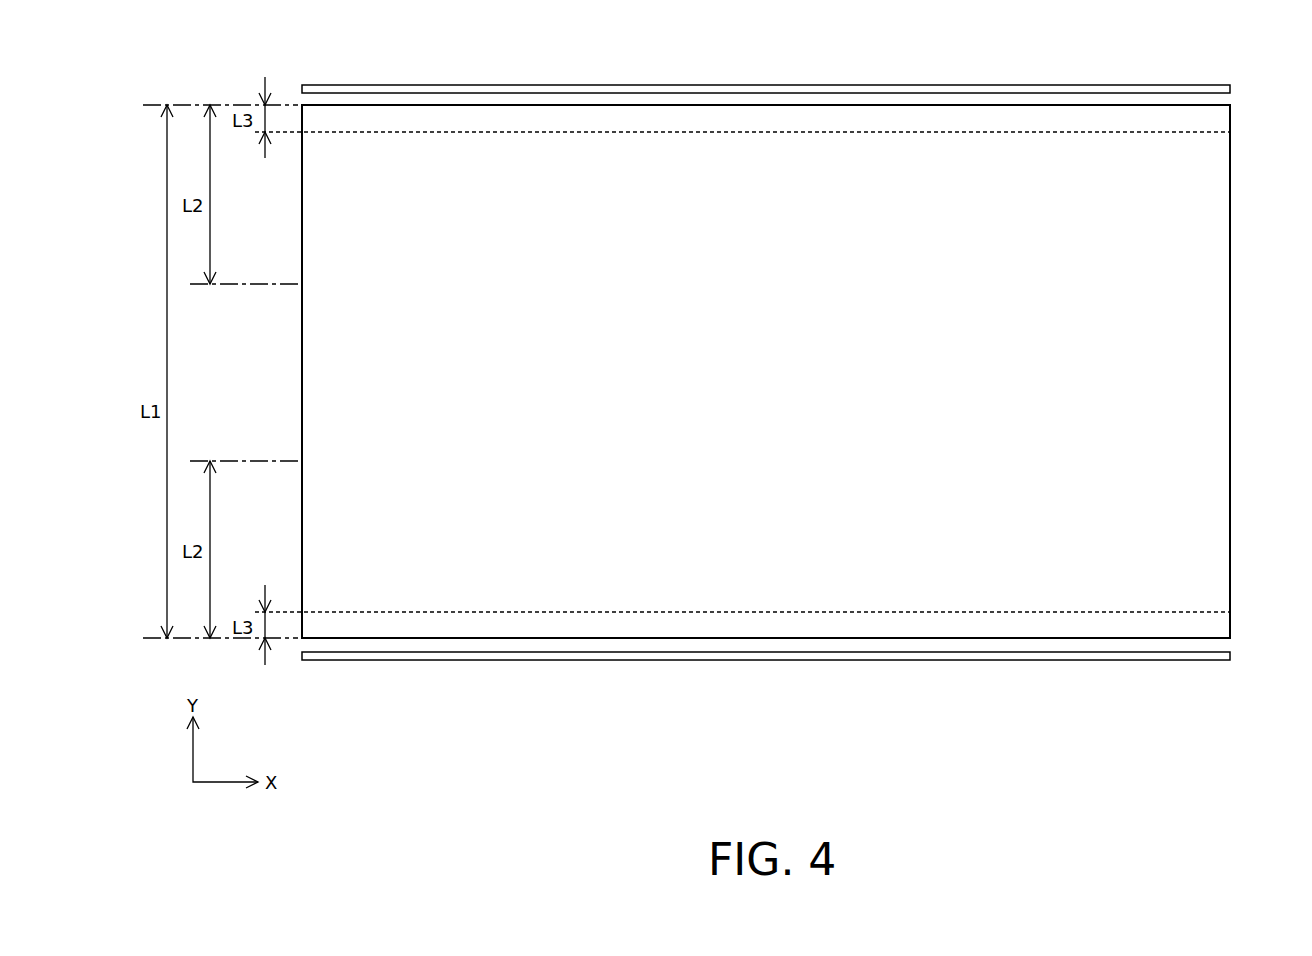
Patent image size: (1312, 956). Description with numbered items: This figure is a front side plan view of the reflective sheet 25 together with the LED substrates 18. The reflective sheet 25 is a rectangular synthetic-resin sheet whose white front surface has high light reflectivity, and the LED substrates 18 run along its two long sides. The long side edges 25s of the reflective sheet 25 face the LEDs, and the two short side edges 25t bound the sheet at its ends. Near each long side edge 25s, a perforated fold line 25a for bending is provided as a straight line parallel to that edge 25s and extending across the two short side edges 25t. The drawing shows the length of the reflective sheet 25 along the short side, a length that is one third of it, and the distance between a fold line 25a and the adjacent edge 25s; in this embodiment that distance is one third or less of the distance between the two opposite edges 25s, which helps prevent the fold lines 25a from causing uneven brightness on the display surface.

The reflective sheet 25 is at (1208, 353).
The LED substrate 18 is at (837, 90).
The fold line 25a is at (1155, 132).
The long side edge 25s is at (703, 105).
The short side edge 25t is at (302, 367).